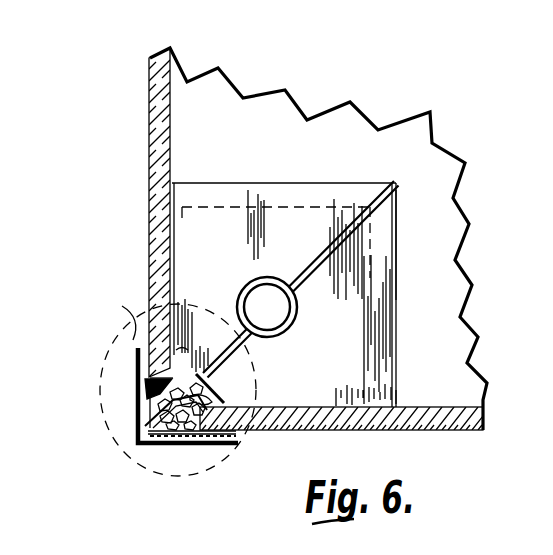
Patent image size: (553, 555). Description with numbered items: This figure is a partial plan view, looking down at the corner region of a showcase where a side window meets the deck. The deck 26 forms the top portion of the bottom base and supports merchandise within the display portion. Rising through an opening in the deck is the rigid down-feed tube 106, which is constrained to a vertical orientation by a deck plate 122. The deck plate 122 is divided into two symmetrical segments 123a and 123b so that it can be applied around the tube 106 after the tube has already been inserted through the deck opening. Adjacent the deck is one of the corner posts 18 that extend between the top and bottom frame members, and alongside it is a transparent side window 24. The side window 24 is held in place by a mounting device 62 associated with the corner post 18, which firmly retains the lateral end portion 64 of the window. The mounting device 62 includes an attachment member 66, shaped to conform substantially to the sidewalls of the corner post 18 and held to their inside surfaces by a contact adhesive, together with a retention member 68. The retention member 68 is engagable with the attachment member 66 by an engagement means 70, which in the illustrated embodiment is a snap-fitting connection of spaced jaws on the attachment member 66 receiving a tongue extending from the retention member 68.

The side window 24 is at (150, 172).
The deck 26 is at (285, 113).
The deck plate 122 is at (252, 180).
The deck plate segment 123a is at (348, 178).
The deck plate segment 123b is at (395, 218).
The rigid down-feed tube 106 is at (300, 310).
The retention member 68 is at (190, 345).
The mounting device 62 is at (222, 377).
The lateral end portion 64 is at (232, 436).
The attachment member 66 is at (142, 446).
The engagement means 70 is at (183, 446).
The corner post 18 is at (190, 446).